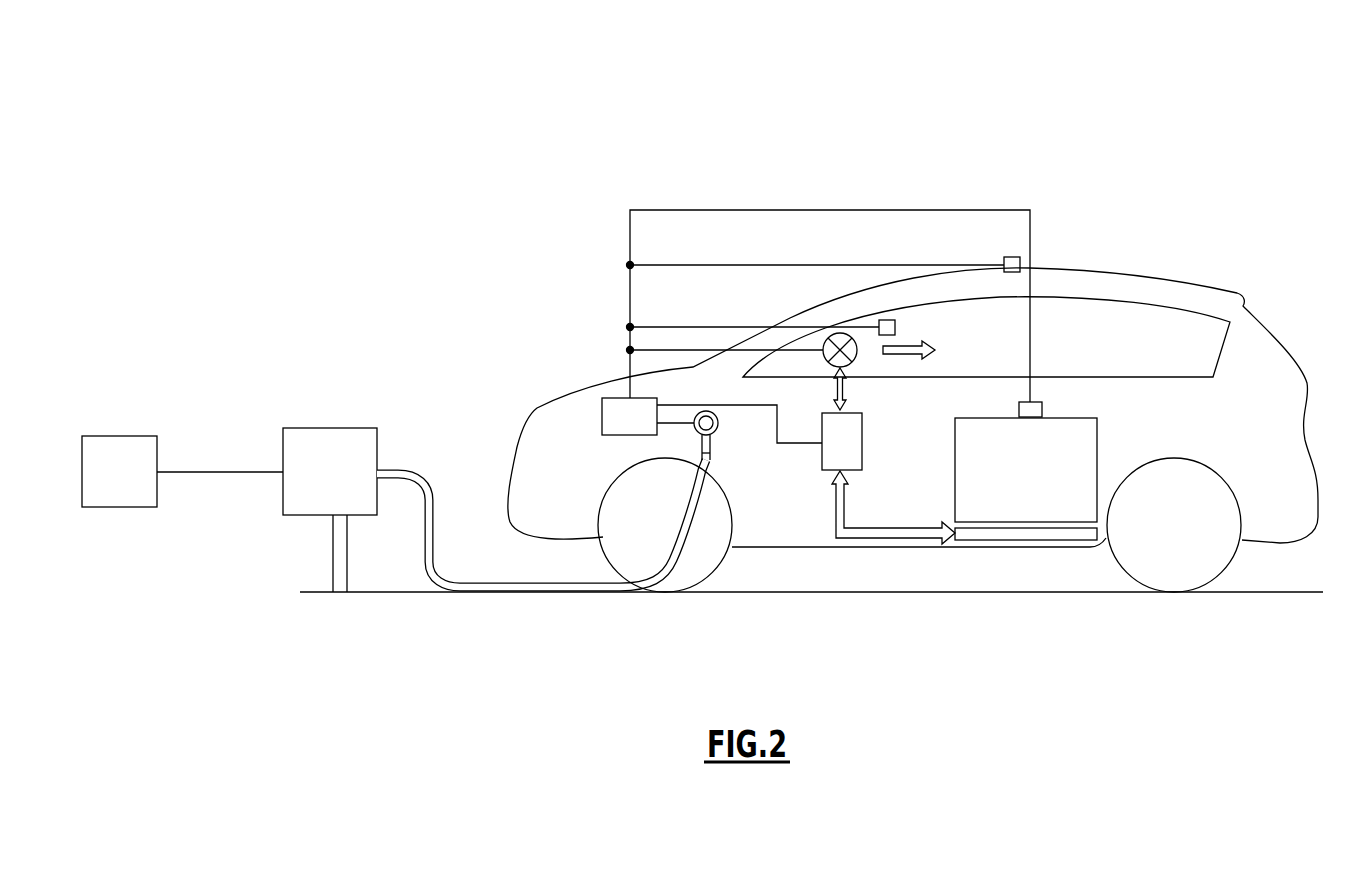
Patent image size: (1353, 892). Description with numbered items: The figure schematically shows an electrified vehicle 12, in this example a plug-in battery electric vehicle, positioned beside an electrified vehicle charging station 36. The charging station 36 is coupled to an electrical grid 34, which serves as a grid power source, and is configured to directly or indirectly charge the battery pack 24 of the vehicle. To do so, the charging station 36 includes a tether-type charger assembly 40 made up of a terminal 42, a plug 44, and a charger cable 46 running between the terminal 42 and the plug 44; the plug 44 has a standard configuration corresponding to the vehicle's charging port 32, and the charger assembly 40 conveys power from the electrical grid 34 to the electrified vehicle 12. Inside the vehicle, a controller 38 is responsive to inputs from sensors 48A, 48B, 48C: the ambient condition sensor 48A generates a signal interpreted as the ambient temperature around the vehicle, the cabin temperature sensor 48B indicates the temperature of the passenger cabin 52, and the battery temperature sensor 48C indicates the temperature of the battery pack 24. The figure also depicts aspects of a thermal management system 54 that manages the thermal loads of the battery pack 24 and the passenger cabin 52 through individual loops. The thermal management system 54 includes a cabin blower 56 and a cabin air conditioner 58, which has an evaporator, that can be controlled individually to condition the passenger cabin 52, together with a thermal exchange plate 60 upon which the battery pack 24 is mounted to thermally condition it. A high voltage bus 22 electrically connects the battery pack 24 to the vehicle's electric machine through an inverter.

The electrified vehicle 12 is at (1134, 227).
The high voltage bus 22 is at (374, 443).
The battery pack 24 is at (1097, 455).
The charging port 32 is at (718, 412).
The electrical grid 34 is at (104, 488).
The electrified vehicle charging station 36 is at (287, 551).
The controller 38 is at (645, 432).
The charger assembly 40 is at (528, 558).
The terminal 42 is at (315, 488).
The plug 44 is at (701, 441).
The charger cable 46 is at (513, 588).
The ambient condition sensor 48A is at (1004, 262).
The cabin temperature sensor 48B is at (895, 327).
The battery temperature sensor 48C is at (1042, 410).
The passenger cabin 52 is at (986, 351).
The thermal management system 54 is at (886, 466).
The cabin blower 56 is at (822, 364).
The cabin air conditioner 58 is at (822, 452).
The thermal exchange plate 60 is at (973, 542).